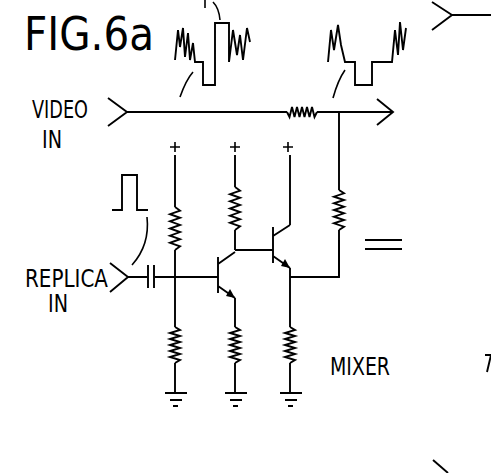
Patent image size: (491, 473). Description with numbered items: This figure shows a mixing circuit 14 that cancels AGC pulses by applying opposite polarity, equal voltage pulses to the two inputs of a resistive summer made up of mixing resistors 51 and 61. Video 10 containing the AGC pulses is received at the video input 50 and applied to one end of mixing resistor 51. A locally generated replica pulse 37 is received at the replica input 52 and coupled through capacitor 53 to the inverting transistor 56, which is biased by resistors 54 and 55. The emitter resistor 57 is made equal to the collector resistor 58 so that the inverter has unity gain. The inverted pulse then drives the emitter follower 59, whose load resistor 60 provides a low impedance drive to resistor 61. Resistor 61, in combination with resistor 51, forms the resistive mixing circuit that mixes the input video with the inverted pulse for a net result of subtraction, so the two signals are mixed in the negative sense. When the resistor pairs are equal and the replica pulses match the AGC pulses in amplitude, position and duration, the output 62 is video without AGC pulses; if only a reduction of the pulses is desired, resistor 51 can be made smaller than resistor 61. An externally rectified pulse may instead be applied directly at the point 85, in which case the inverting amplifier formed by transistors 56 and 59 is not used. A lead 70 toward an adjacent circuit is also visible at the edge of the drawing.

The video 10 is at (258, 40).
The video input 50 is at (133, 121).
The mixing resistor 51 is at (302, 132).
The output 62 is at (357, 123).
The replica pulse 37 is at (118, 165).
The replica pulse input 52 is at (118, 293).
The capacitor 53 is at (150, 290).
The bias resistor 54 is at (188, 227).
The bias resistor 55 is at (188, 343).
The inverting transistor 56 is at (236, 275).
The emitter resistor 57 is at (248, 343).
The collector resistor 58 is at (248, 207).
The emitter follower 59 is at (291, 246).
The load resistor 60 is at (303, 343).
The mixing resistor 61 is at (324, 210).
The mixer input point 85 is at (339, 289).
The mixing circuit 14 is at (383, 226).
The adjacent circuit lead 70 is at (460, 467).